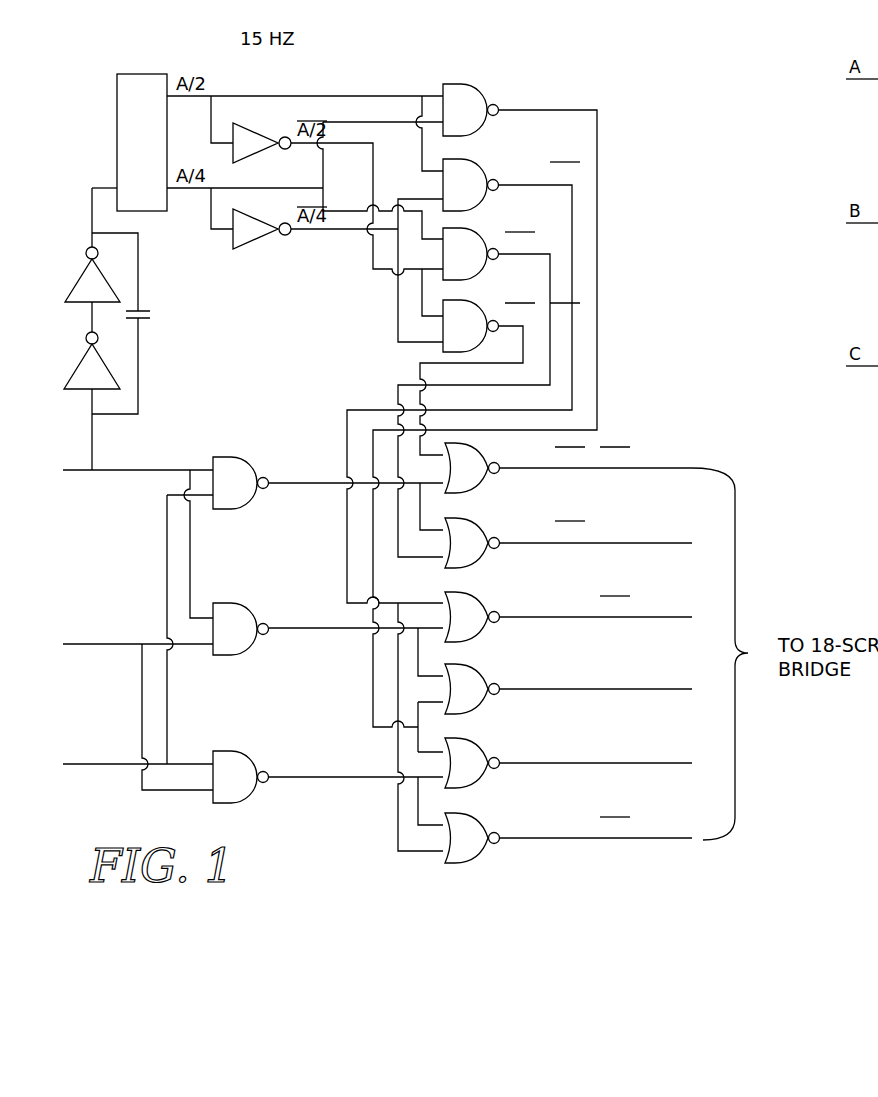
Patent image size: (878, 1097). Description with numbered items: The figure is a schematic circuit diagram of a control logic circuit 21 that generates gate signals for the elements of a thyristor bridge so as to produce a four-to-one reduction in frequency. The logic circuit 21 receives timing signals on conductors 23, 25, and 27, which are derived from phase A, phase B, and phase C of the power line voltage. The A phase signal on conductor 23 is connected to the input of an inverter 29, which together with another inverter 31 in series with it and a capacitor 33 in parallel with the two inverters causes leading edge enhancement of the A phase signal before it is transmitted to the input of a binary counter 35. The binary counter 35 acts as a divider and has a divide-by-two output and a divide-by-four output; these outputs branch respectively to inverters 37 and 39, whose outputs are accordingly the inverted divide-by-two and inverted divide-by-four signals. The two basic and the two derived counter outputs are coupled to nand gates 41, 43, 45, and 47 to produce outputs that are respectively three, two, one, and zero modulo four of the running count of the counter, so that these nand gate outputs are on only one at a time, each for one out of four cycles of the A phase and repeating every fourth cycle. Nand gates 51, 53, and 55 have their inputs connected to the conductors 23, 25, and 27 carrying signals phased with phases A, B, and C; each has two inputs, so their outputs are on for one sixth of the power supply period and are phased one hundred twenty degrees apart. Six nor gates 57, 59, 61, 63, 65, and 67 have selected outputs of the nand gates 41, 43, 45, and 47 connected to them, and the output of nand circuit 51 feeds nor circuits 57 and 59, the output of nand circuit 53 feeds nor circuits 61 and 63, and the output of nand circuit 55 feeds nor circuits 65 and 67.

The logic circuit 21 is at (250, 382).
The conductor 23 is at (90, 475).
The conductor 25 is at (90, 649).
The conductor 27 is at (90, 769).
The inverter 29 is at (100, 350).
The inverter 31 is at (100, 264).
The capacitor 33 is at (146, 330).
The binary counter 35 is at (116, 104).
The inverter 37 is at (274, 129).
The inverter 39 is at (275, 216).
The nand gate 41 is at (474, 92).
The nand gate 43 is at (474, 166).
The nand gate 45 is at (474, 236).
The nand gate 47 is at (470, 350).
The nand gate 51 is at (238, 466).
The nand gate 53 is at (238, 611).
The nand gate 55 is at (238, 759).
The nor gate 57 is at (480, 488).
The nor gate 59 is at (480, 563).
The nor gate 61 is at (480, 637).
The nor gate 63 is at (480, 709).
The nor gate 65 is at (480, 784).
The nor gate 67 is at (480, 859).